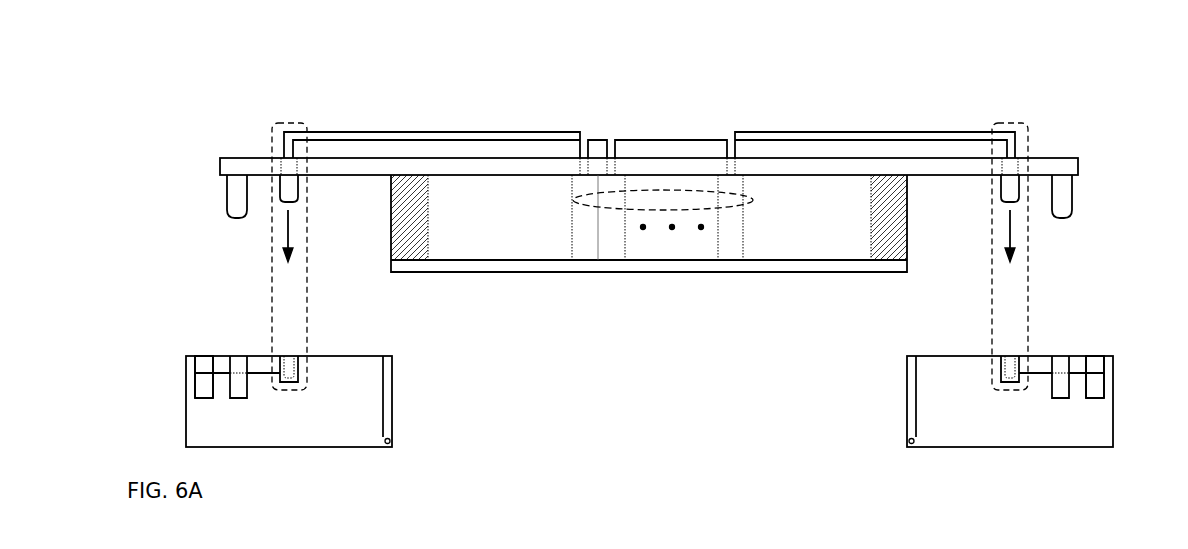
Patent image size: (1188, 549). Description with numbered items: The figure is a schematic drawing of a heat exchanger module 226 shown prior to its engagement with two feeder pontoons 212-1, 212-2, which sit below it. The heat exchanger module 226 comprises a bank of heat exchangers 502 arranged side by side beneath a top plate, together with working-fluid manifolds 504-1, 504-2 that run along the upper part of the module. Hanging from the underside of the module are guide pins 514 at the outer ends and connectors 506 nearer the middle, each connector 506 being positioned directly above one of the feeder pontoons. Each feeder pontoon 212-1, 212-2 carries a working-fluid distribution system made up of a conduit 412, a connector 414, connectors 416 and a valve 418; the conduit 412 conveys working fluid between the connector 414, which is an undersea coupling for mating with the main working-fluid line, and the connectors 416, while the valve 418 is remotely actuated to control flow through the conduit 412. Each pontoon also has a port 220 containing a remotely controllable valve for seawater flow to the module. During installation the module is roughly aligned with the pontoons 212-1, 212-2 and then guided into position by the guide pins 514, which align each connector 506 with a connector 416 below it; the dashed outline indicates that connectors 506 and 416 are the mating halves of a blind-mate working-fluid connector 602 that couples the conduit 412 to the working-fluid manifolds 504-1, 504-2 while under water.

The heat exchanger module 226 is at (250, 93).
The working-fluid manifold 504-1 is at (460, 137).
The working-fluid manifold 504-2 is at (906, 137).
The heat exchanger 502 is at (573, 200).
The connector 506 is at (290, 194).
The guide pin 514 is at (240, 216).
The blind-mate working-fluid connector 602 is at (272, 303).
The conduit 412 is at (292, 366).
The connector 416 is at (300, 378).
The connector 414 is at (205, 365).
The valve 418 is at (202, 398).
The port 220 is at (390, 407).
The feeder pontoon 212-1 is at (250, 434).
The feeder pontoon 212-2 is at (1095, 434).